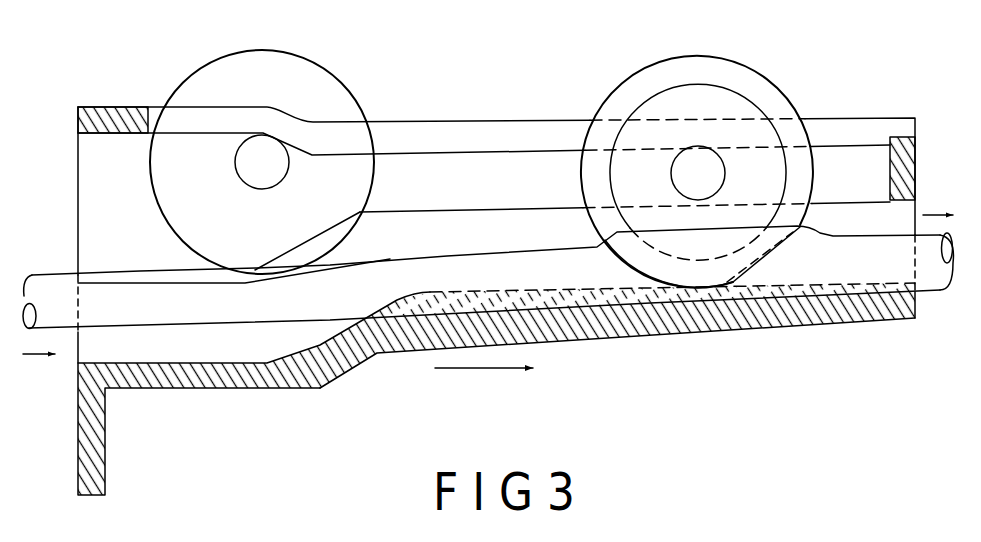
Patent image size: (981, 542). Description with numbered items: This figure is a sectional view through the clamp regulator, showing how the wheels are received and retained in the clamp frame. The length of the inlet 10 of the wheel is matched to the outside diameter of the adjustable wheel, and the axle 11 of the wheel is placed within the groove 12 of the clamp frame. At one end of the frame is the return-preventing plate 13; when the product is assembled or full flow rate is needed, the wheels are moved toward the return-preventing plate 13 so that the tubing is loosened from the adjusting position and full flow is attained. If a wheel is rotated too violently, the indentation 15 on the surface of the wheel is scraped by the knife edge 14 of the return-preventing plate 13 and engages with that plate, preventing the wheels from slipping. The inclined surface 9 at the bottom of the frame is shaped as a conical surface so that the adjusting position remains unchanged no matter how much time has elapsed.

The inclined surface 9 is at (703, 312).
The inlet 10 is at (78, 209).
The axle 11 is at (702, 170).
The groove 12 is at (873, 165).
The return-preventing plate 13 is at (97, 112).
The knife edge 14 is at (147, 134).
The indentation 15 is at (764, 76).